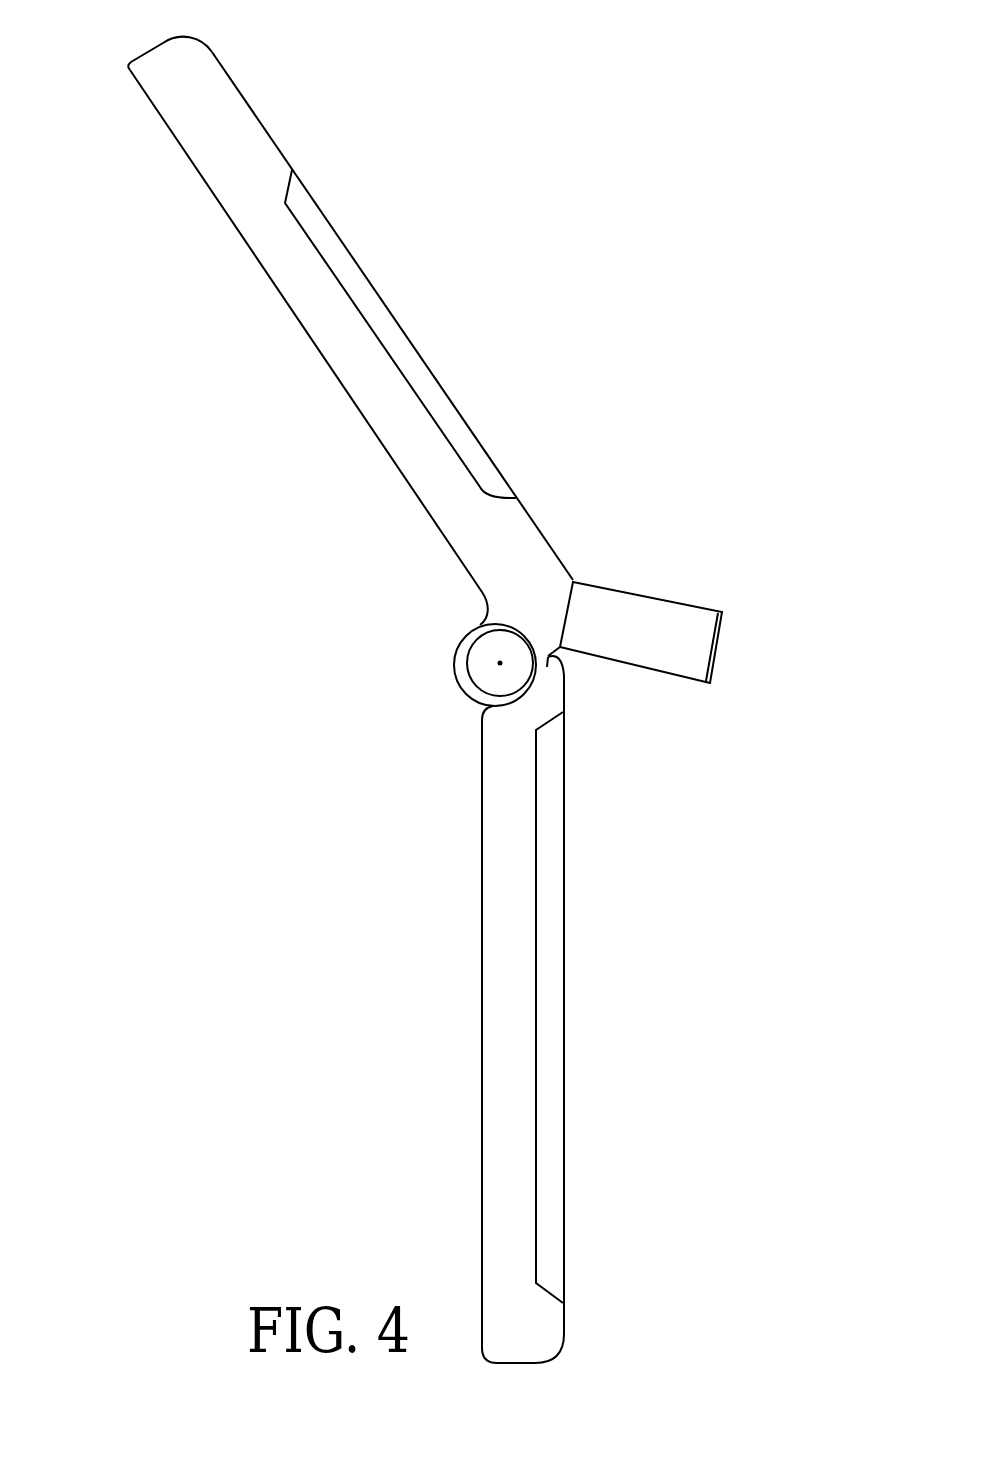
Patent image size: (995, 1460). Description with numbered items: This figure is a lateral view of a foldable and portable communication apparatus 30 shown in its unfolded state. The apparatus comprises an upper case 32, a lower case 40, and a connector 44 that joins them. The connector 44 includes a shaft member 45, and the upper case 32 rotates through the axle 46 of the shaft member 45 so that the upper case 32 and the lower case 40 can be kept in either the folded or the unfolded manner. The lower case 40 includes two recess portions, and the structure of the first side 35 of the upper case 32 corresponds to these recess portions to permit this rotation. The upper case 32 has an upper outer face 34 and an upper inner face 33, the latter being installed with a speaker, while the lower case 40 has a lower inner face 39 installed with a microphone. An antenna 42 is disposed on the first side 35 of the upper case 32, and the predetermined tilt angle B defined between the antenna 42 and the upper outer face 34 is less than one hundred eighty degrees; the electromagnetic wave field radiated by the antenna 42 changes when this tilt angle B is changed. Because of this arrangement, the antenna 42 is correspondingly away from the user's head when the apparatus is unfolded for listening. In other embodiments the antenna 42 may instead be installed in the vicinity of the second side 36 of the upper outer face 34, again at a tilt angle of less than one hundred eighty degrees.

The portable communication apparatus 30 is at (558, 200).
The upper case 32 is at (300, 127).
The upper inner face 33 is at (300, 332).
The upper outer face 34 is at (328, 220).
The first side 35 is at (563, 643).
The second side 36 is at (168, 44).
The lower inner face 39 is at (480, 1002).
The lower case 40 is at (592, 1040).
The antenna 42 is at (688, 620).
The connector 44 is at (627, 703).
The shaft member 45 is at (460, 683).
The axle 46 is at (500, 663).
The predetermined tilt angle B is at (610, 583).